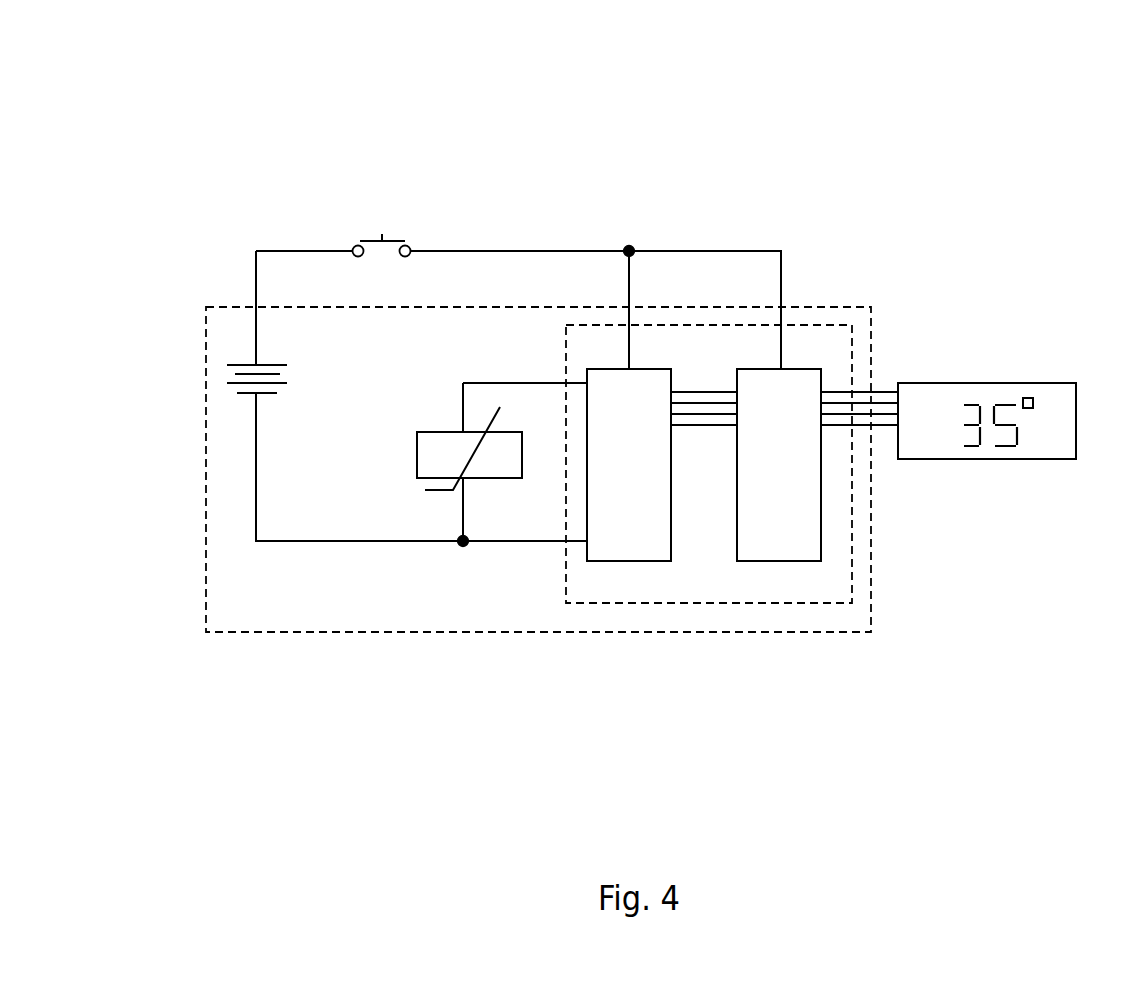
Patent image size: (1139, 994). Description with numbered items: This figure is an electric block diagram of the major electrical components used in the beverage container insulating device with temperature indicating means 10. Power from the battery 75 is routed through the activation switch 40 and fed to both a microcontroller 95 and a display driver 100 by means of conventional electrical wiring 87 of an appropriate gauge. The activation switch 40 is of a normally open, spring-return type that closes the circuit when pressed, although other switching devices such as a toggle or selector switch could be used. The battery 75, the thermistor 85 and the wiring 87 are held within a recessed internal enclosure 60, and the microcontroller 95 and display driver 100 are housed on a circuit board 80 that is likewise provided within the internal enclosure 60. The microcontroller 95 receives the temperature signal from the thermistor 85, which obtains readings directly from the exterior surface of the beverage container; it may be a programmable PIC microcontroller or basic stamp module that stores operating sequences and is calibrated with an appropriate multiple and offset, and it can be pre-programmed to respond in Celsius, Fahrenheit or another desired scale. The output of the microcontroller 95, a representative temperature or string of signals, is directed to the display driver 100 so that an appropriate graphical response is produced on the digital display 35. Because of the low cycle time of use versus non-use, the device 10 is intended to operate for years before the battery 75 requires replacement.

The beverage container insulating device with temperature indicating means 10 is at (128, 125).
The digital display 35 is at (1048, 420).
The activation switch 40 is at (390, 240).
The internal enclosure 60 is at (288, 632).
The battery 75 is at (227, 383).
The circuit board 80 is at (828, 603).
The thermistor 85 is at (433, 468).
The electrical wiring 87 is at (597, 251).
The microcontroller 95 is at (605, 542).
The display driver 100 is at (768, 540).